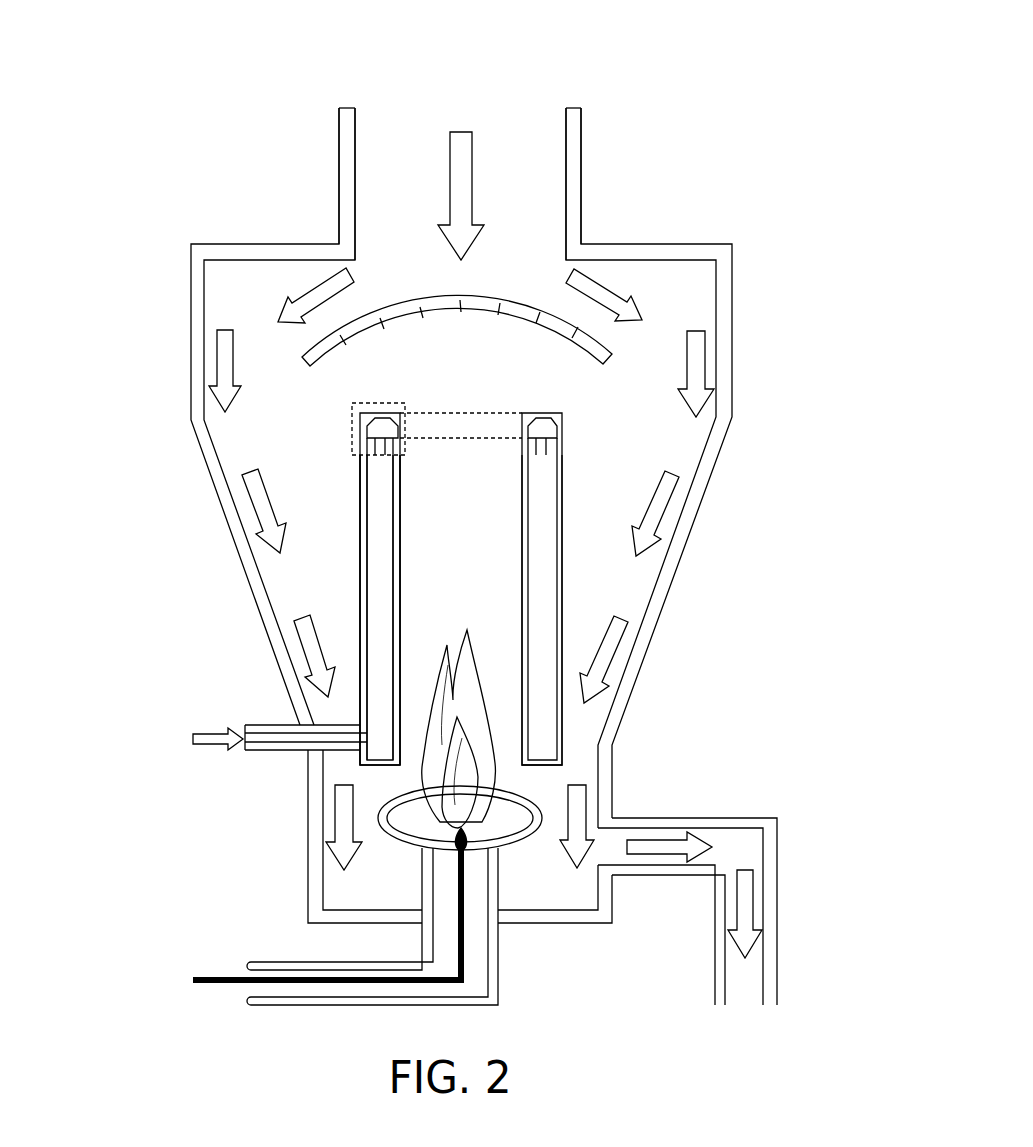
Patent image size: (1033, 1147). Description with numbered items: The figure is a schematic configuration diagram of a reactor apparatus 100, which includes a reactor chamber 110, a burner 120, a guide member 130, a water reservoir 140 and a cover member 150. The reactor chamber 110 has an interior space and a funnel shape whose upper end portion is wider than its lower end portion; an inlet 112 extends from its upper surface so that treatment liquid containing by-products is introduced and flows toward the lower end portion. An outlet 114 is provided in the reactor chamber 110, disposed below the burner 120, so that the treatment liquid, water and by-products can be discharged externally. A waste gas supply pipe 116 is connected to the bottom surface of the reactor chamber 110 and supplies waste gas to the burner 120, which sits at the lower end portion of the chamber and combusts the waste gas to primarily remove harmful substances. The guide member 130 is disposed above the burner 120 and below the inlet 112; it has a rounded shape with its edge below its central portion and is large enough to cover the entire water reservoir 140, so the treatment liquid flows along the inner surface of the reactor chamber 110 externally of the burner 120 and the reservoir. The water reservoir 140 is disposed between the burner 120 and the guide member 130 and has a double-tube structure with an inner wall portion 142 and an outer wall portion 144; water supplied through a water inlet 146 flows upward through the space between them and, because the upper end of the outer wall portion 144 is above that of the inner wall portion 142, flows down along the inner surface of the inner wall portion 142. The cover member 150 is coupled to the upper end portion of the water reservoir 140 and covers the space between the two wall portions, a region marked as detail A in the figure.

The reactor apparatus 100 is at (320, 35).
The reactor chamber 110 is at (730, 315).
The inlet 112 is at (577, 140).
The outlet 114 is at (650, 876).
The waste gas supply pipe 116 is at (505, 977).
The burner 120 is at (530, 826).
The guide member 130 is at (588, 318).
The water reservoir 140 is at (153, 550).
The inner wall portion 142 is at (372, 586).
The outer wall portion 144 is at (372, 527).
The water inlet 146 is at (262, 726).
The cover member 150 is at (378, 410).
The detail region A is at (352, 436).